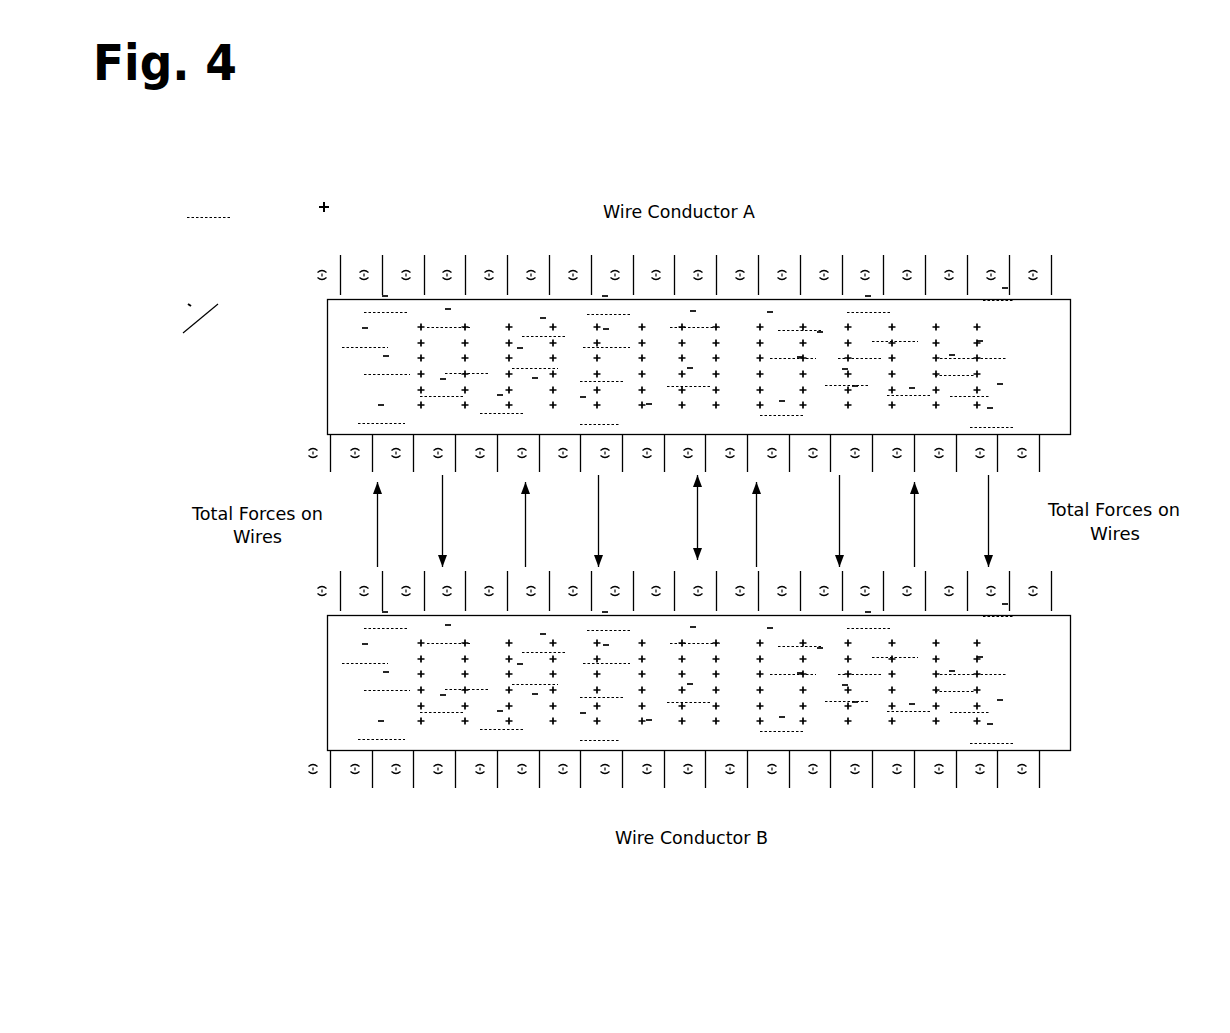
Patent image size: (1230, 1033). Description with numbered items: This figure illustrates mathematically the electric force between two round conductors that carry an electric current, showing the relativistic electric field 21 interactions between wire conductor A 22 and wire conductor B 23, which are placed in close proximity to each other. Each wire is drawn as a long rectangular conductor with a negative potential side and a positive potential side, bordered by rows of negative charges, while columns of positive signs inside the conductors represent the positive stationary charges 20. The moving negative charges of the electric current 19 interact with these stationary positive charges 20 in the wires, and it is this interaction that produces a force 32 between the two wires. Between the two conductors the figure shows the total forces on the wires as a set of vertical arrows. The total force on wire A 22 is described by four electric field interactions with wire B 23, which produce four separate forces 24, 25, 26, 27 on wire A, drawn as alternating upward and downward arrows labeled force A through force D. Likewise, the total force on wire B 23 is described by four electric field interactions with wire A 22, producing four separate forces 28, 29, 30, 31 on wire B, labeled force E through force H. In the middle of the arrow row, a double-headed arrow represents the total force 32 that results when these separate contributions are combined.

The electric current 19 is at (207, 293).
The positive stationary charges 20 is at (339, 188).
The relativistic electric field 21 is at (224, 186).
The wire conductor A 22 is at (1042, 226).
The wire conductor B 23 is at (1125, 678).
The force 24 is at (376, 524).
The force 25 is at (441, 521).
The force 26 is at (524, 527).
The force 27 is at (597, 521).
The force 28 is at (755, 523).
The force 29 is at (838, 521).
The force 30 is at (913, 524).
The force 31 is at (987, 521).
The total force 32 is at (674, 520).